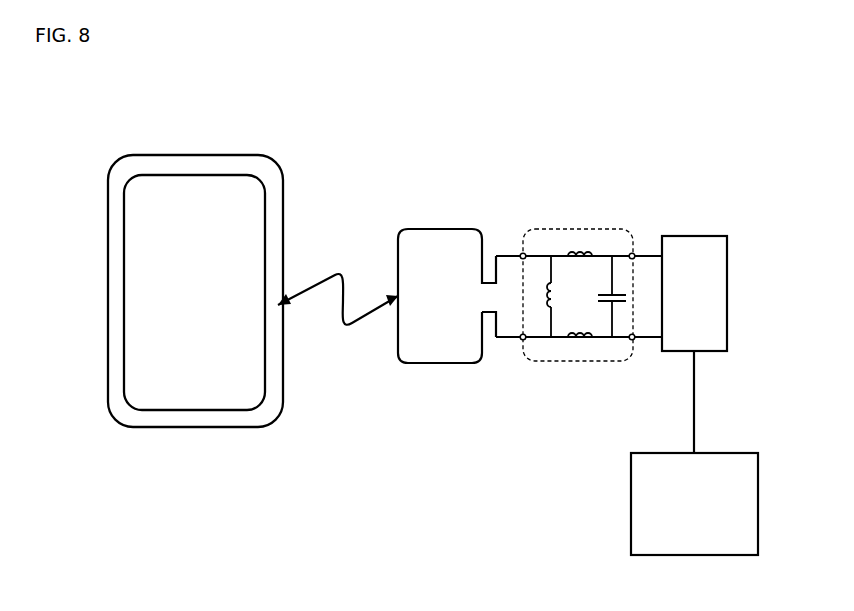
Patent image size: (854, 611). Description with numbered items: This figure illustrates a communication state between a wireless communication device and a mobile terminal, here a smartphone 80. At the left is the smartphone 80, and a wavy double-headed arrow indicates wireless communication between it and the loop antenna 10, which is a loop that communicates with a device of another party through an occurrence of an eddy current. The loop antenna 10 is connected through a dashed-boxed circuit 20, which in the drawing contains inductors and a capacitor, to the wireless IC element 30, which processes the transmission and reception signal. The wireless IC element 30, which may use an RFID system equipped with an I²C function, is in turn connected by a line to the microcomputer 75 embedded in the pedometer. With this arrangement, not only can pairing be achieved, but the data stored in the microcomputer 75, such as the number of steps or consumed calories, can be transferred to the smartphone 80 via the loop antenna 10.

The smartphone 80 is at (283, 190).
The loop antenna 10 is at (415, 228).
The matching circuit 20 is at (570, 230).
The wireless IC element 30 is at (678, 236).
The microcomputer 75 is at (713, 453).